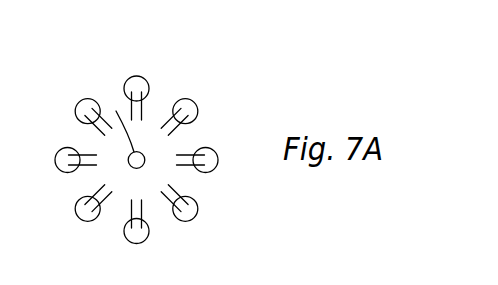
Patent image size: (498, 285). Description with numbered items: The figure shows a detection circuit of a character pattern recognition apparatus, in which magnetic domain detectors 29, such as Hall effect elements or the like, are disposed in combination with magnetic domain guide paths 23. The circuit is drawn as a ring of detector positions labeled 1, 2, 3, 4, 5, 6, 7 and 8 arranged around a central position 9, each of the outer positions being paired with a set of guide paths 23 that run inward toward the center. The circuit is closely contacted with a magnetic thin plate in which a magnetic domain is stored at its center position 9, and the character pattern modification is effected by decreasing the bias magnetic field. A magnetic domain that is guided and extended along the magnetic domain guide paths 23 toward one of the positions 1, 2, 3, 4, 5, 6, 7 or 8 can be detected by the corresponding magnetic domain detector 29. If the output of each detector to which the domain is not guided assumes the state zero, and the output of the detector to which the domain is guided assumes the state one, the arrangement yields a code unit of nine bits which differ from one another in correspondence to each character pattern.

The first base pin 1 is at (153, 82).
The second base pin 2 is at (194, 104).
The third base pin 3 is at (218, 160).
The fourth base pin 4 is at (192, 217).
The fifth base pin 5 is at (138, 243).
The sixth base pin 6 is at (82, 220).
The seventh base pin 7 is at (56, 161).
The eighth base pin 8 is at (80, 104).
The center locating key 9 is at (115, 109).
The magnetic domain guide paths 23 is at (142, 104).
The magnetic domain detectors 29 is at (147, 79).